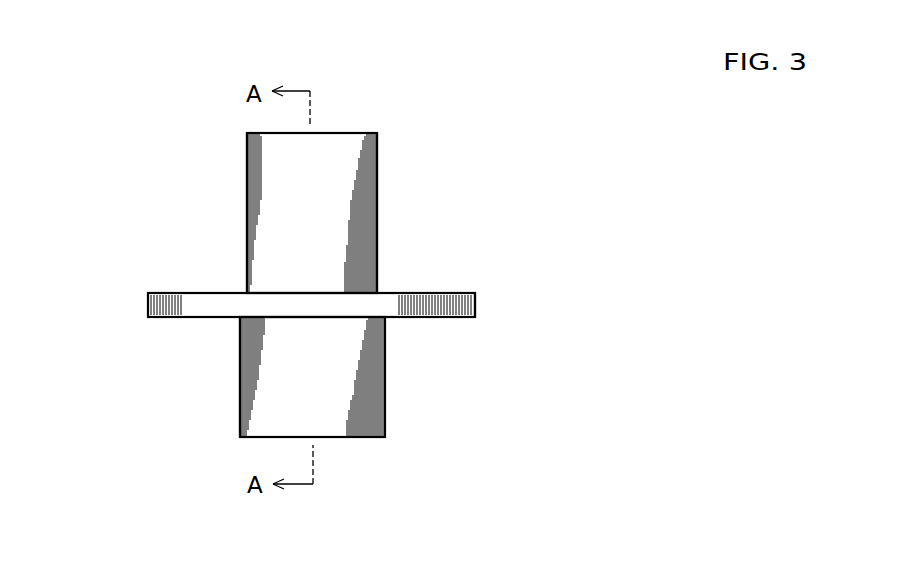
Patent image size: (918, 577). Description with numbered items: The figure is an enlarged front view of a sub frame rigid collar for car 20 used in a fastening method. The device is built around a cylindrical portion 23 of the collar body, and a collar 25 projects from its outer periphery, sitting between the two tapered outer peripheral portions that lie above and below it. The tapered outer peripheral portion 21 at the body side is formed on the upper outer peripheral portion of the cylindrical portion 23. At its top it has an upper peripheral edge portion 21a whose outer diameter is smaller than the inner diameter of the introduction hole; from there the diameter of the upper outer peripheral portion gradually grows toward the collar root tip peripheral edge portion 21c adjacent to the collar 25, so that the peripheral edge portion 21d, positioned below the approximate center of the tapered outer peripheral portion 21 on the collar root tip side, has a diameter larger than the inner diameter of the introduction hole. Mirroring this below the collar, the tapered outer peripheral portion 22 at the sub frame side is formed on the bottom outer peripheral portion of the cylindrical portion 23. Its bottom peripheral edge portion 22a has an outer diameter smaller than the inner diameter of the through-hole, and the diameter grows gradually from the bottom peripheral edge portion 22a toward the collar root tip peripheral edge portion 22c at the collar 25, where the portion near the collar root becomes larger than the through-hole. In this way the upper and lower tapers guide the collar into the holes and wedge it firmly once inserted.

The sub frame rigid collar for car 20 is at (448, 170).
The tapered outer peripheral portion at the body side 21 is at (378, 170).
The upper peripheral edge portion 21a is at (258, 133).
The collar root tip peripheral edge portion 21c is at (378, 290).
The peripheral edge portion at collar root tip side 21d is at (248, 195).
The tapered outer peripheral portion at the sub frame side 22 is at (387, 377).
The bottom peripheral edge portion 22a is at (347, 437).
The collar root tip peripheral edge portion 22c is at (238, 320).
The cylindrical portion 23 is at (192, 261).
The collar 25 is at (478, 298).